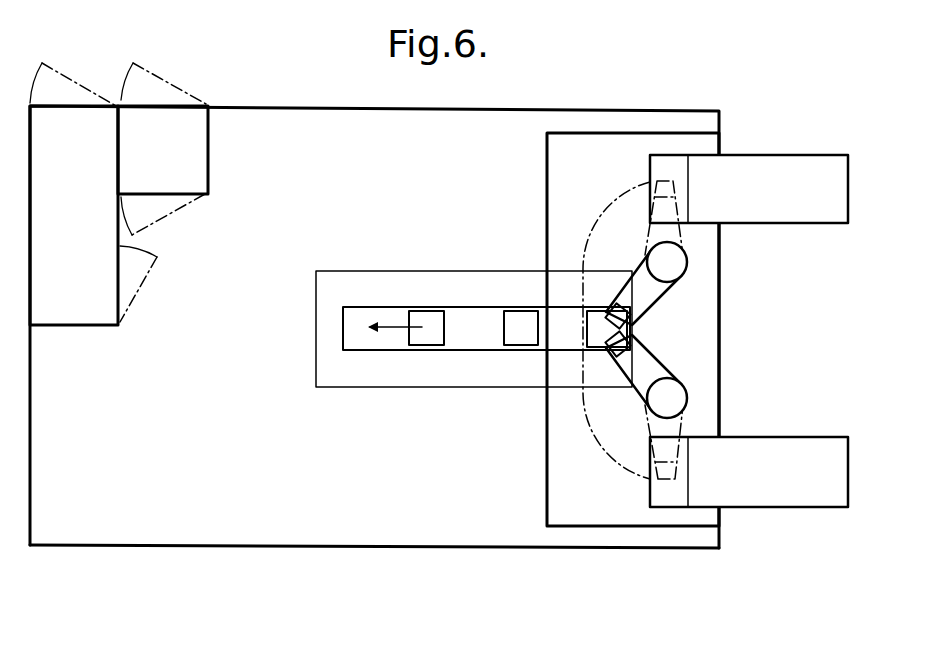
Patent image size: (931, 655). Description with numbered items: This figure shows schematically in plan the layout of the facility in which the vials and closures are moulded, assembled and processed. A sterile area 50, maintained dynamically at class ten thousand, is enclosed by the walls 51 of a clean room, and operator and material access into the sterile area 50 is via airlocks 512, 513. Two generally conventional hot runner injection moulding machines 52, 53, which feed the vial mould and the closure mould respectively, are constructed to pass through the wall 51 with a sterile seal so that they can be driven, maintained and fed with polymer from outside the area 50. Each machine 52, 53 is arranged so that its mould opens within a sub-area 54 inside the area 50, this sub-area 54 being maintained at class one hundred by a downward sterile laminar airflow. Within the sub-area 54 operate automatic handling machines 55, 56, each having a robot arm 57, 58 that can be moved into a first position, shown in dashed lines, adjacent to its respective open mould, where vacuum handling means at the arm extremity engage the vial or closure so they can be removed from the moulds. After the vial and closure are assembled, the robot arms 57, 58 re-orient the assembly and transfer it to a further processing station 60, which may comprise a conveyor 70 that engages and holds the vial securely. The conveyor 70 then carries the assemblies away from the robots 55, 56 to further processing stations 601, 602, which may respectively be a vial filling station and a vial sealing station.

The sterile area 50 is at (243, 426).
The wall 51 is at (248, 548).
The airlock 512 is at (53, 226).
The airlock 513 is at (141, 160).
The injection moulding machine 52 is at (776, 198).
The injection moulding machine 53 is at (779, 481).
The sub-area 54 is at (548, 488).
The automatic handling machinery 55 is at (672, 262).
The automatic handling machinery 56 is at (673, 395).
The robot arm 57 is at (642, 293).
The robot arm 58 is at (642, 358).
The further processing station 60 is at (593, 327).
The vial filling station 601 is at (517, 338).
The vial sealing station 602 is at (427, 318).
The conveyor 70 is at (355, 323).